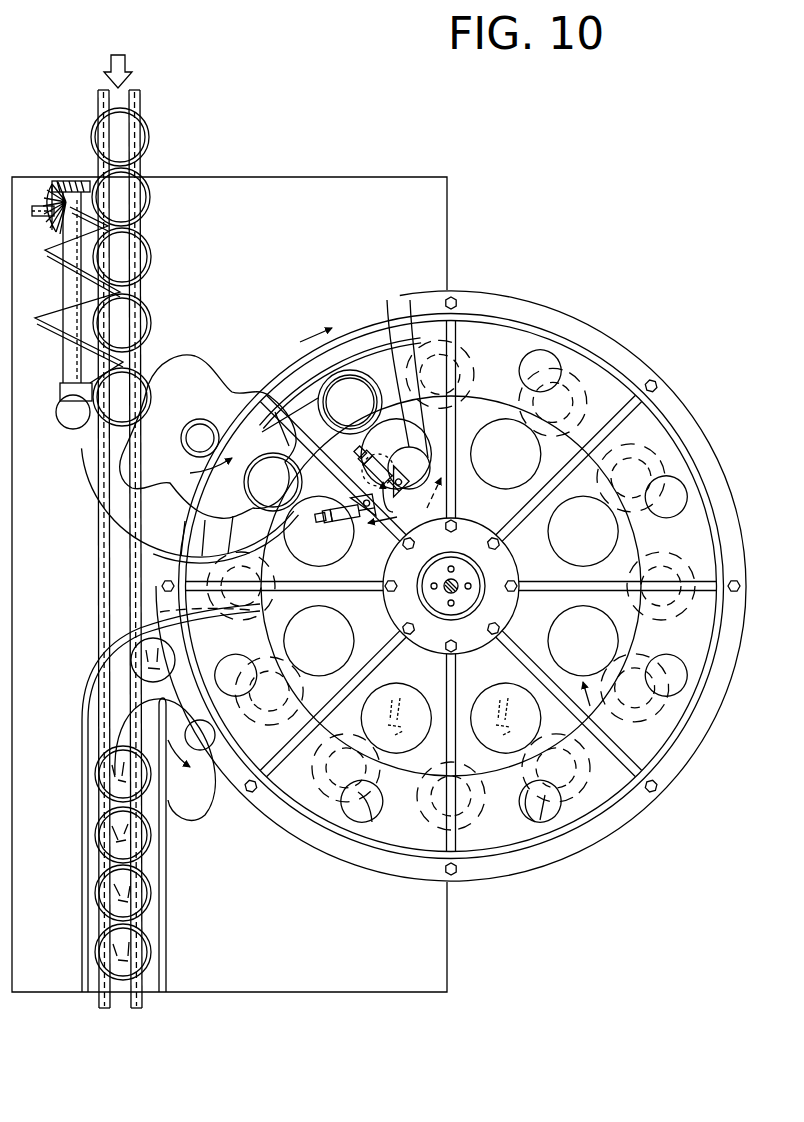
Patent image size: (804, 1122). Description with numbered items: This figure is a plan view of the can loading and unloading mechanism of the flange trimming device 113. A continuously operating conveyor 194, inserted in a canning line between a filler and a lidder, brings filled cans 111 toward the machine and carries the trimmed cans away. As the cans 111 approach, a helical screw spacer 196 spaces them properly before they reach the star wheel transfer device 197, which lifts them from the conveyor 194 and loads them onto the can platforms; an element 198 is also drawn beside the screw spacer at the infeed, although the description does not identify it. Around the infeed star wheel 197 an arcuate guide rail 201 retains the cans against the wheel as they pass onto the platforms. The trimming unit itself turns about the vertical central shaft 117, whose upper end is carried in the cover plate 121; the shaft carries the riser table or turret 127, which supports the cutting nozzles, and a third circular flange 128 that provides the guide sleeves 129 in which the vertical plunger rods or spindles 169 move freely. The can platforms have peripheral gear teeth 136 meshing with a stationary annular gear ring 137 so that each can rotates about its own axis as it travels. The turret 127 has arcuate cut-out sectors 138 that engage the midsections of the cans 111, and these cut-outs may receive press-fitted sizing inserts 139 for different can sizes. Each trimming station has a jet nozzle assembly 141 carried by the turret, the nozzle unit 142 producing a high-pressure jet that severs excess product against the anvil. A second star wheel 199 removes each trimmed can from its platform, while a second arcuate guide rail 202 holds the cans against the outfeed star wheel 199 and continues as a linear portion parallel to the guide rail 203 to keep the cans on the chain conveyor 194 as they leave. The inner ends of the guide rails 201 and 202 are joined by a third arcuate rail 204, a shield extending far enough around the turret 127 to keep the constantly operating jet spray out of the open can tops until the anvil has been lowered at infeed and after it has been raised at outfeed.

The cans 111 is at (150, 139).
The flange trimming device 113 is at (582, 288).
The central shaft 117 is at (472, 580).
The cover plate 121 is at (487, 681).
The riser table or turret 127 is at (335, 469).
The third circular flange 128 is at (394, 690).
The guide sleeves 129 is at (372, 803).
The peripheral gear teeth 136 is at (282, 438).
The stationary annular gear ring 137 is at (302, 372).
The arcuate cut-out sectors 138 is at (368, 431).
The sizing inserts 139 is at (388, 322).
The jet nozzle assembly 141 is at (625, 742).
The nozzle unit 142 is at (324, 505).
The plunger rod or spindle 169 is at (525, 815).
The conveyor 194 is at (141, 102).
The screw spacer 196 is at (60, 325).
The star wheel transfer device 197 is at (180, 370).
The brush 198 is at (48, 188).
The second star wheel 199 is at (197, 808).
The arcuate guide rail 201 is at (95, 496).
The second arcuate guide rail 202 is at (96, 672).
The guide rail 203 is at (167, 935).
The third arcuate rail 204 is at (326, 545).